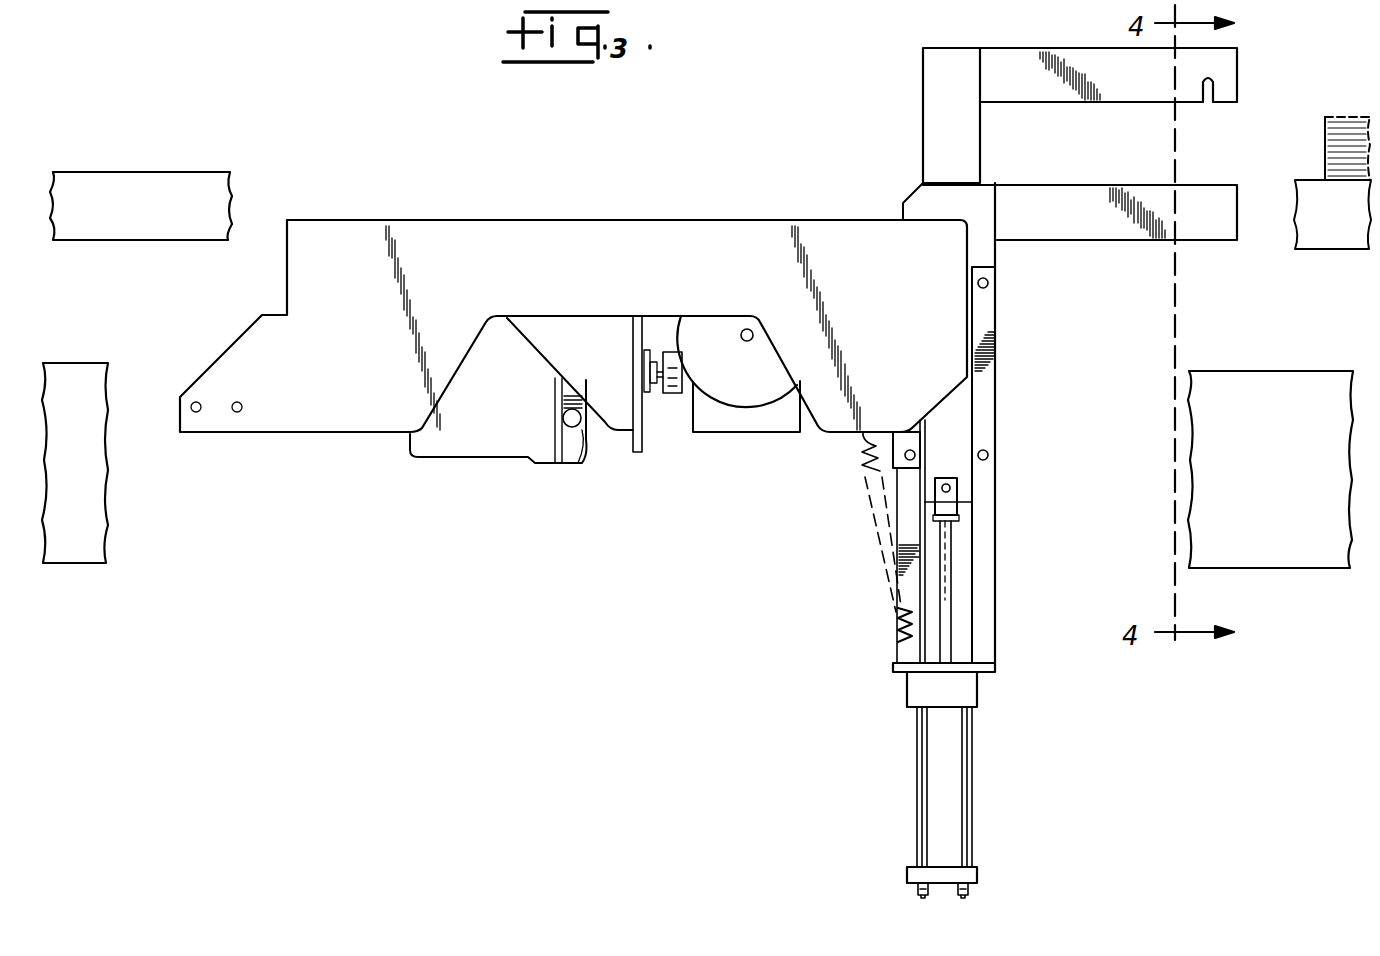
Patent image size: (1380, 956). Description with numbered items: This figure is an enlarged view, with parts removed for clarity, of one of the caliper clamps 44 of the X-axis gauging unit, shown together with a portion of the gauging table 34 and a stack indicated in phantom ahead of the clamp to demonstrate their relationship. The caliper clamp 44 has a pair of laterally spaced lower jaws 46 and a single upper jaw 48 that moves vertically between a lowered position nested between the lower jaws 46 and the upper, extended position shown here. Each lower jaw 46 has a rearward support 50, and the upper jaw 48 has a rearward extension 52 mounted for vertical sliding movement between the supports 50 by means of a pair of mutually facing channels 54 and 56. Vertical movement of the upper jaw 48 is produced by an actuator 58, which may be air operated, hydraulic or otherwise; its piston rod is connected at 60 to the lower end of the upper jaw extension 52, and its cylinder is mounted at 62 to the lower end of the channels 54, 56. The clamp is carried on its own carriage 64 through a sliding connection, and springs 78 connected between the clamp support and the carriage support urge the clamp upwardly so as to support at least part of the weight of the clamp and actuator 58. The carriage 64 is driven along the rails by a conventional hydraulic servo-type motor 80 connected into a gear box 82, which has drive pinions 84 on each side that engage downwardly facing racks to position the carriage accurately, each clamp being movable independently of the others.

The gauging table 34 is at (100, 507).
The caliper clamp 44 is at (1070, 168).
The lower jaws 46 is at (1213, 240).
The upper jaw 48 is at (1237, 83).
The rearward support 50 is at (912, 192).
The rearward extension of upper jaw 52 is at (925, 72).
The channel 54 is at (897, 570).
The channel 56 is at (988, 582).
The actuator 58 is at (940, 771).
The piston rod connection 60 is at (975, 483).
The cylinder mounting 62 is at (980, 689).
The carriage 64 is at (667, 226).
The springs 78 is at (865, 476).
The hydraulic servo-type motor 80 is at (467, 442).
The gear box 82 is at (718, 430).
The drive pinions 84 is at (753, 398).